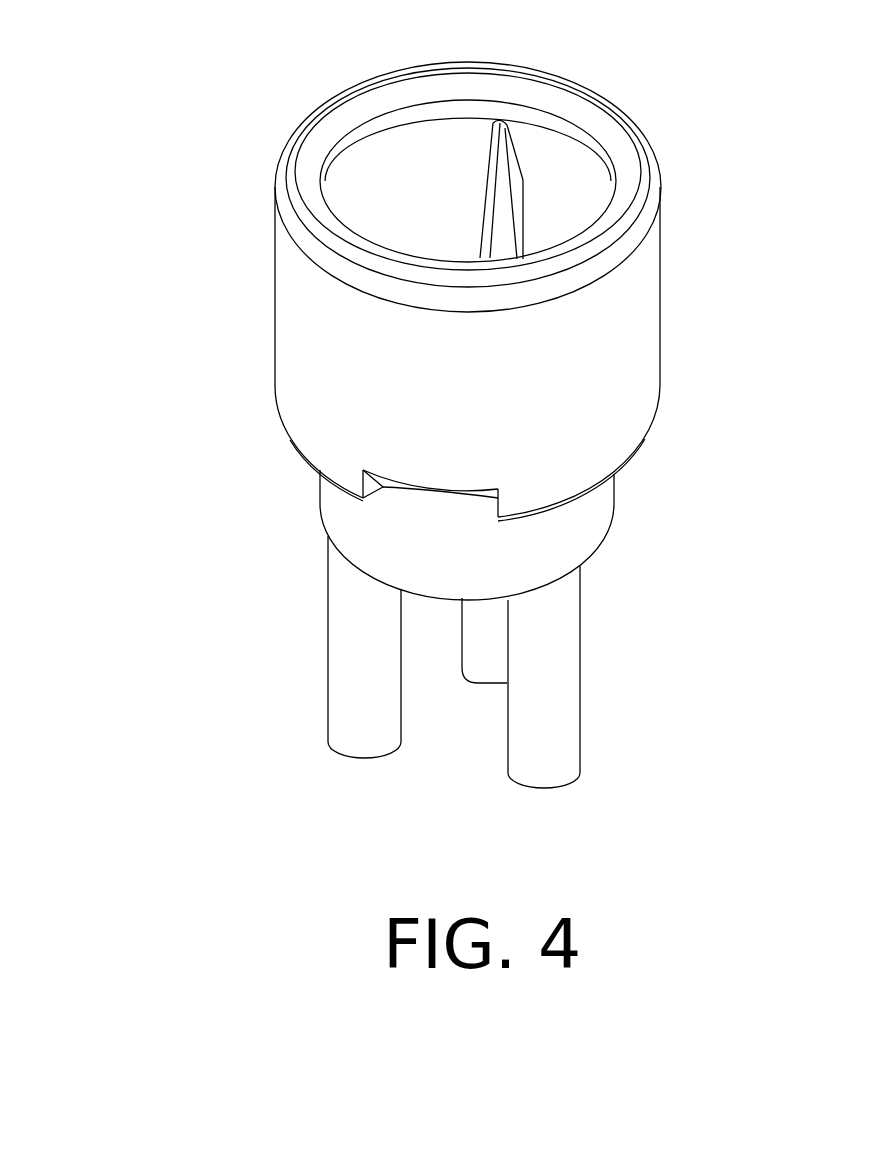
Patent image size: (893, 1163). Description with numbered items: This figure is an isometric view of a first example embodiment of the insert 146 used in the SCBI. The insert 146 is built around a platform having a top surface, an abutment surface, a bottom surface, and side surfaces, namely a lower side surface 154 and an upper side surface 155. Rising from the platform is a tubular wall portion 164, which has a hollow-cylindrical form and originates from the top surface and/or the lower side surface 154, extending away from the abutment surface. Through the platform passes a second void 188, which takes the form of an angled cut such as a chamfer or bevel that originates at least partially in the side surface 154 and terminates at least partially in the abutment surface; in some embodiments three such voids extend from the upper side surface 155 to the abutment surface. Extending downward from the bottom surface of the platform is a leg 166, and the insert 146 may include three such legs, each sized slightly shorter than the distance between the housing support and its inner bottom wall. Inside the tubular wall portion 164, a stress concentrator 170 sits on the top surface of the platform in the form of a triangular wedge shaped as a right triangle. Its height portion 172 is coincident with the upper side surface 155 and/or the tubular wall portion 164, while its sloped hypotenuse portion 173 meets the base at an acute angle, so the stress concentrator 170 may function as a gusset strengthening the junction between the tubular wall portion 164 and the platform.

The insert 146 is at (186, 200).
The lower side surface 154 is at (552, 528).
The upper side surface 155 is at (595, 457).
The tubular wall portion 164 is at (328, 340).
The leg 166 is at (538, 720).
The stress concentrator 170 is at (510, 178).
The height portion 172 is at (525, 222).
The hypotenuse portion 173 is at (498, 158).
The second void 188 is at (378, 509).